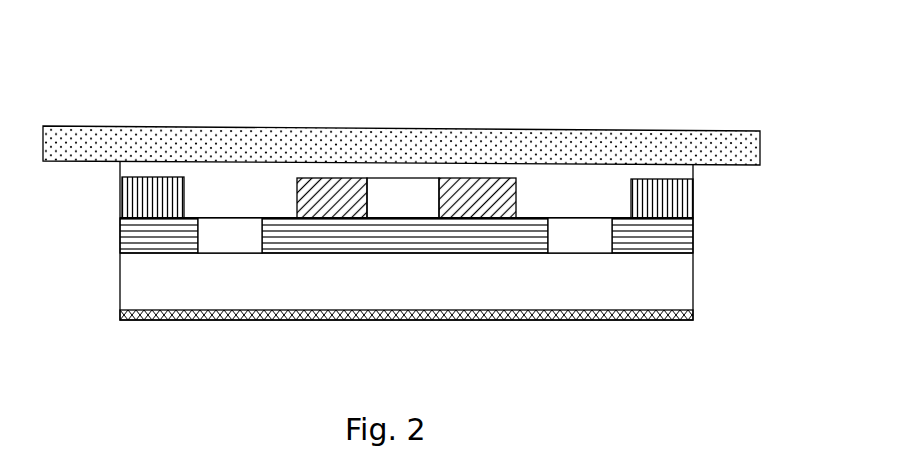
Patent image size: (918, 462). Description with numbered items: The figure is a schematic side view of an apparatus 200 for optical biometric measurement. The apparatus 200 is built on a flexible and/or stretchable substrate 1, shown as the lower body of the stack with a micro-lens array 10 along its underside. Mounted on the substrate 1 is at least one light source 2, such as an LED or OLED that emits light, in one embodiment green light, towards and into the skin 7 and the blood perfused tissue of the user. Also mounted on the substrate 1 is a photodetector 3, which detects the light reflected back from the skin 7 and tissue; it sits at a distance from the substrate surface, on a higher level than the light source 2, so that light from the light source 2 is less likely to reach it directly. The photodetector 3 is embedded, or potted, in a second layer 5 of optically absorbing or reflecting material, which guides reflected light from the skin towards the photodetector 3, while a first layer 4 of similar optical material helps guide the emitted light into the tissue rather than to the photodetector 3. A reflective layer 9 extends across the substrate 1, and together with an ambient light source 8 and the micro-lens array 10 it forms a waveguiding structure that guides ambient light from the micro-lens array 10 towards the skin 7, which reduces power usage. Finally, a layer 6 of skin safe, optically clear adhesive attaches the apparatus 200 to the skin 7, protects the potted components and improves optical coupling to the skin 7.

The apparatus 200 is at (97, 57).
The substrate 1 is at (133, 277).
The light source 2 is at (234, 243).
The photodetector 3 is at (403, 192).
The first layer of optical material 4 is at (675, 204).
The second layer of optical material 5 is at (316, 192).
The layer of adhesive 6 is at (130, 167).
The skin 7 is at (538, 137).
The ambient light source 8 is at (572, 247).
The reflective layer 9 is at (677, 246).
The micro-lens array 10 is at (351, 313).